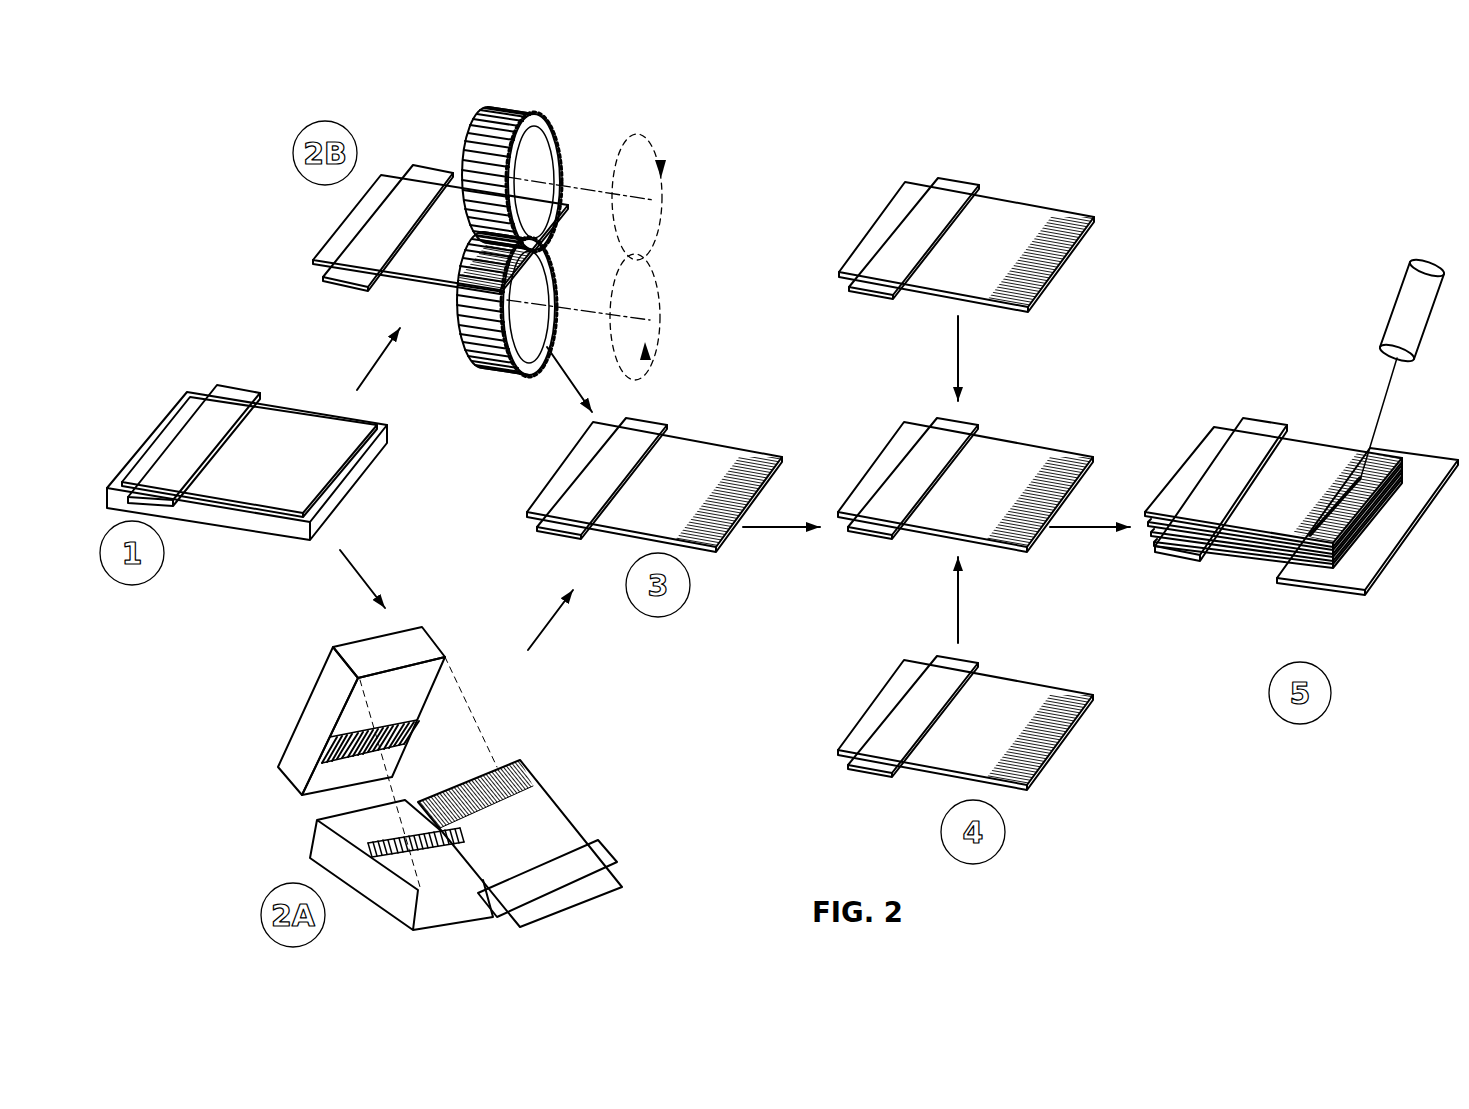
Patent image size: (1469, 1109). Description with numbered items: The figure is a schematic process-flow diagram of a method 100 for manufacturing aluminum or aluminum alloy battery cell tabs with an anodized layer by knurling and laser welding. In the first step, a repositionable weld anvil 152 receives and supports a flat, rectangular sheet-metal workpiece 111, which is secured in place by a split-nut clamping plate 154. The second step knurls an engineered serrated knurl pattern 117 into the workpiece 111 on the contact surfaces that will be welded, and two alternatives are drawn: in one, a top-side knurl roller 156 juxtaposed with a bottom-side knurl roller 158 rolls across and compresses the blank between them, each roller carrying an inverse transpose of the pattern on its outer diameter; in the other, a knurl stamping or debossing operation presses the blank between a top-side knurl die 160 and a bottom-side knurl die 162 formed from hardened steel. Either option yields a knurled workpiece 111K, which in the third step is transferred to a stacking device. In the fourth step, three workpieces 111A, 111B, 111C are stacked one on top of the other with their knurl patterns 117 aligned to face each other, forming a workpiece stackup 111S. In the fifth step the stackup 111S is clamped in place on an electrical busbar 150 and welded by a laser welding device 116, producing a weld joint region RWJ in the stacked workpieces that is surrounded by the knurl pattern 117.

The method 100 is at (205, 138).
The battery cell tab 111 is at (287, 422).
The knurled workpiece 111K is at (687, 450).
The battery cell tab 111A is at (966, 211).
The battery cell tab 111B is at (965, 450).
The battery cell tab 111C is at (965, 687).
The workpiece stackup 111S is at (1213, 427).
The knurl pattern 117 is at (483, 270).
The laser welding device 116 is at (1398, 300).
The weld joint region RWJ is at (1323, 508).
The electrical busbar 150 is at (1280, 580).
The weld anvil 152 is at (245, 532).
The split-nut clamping plate 154 is at (225, 397).
The knurl roller 156 is at (527, 103).
The knurl roller 158 is at (483, 375).
The knurl die 160 is at (327, 680).
The knurl die 162 is at (323, 847).